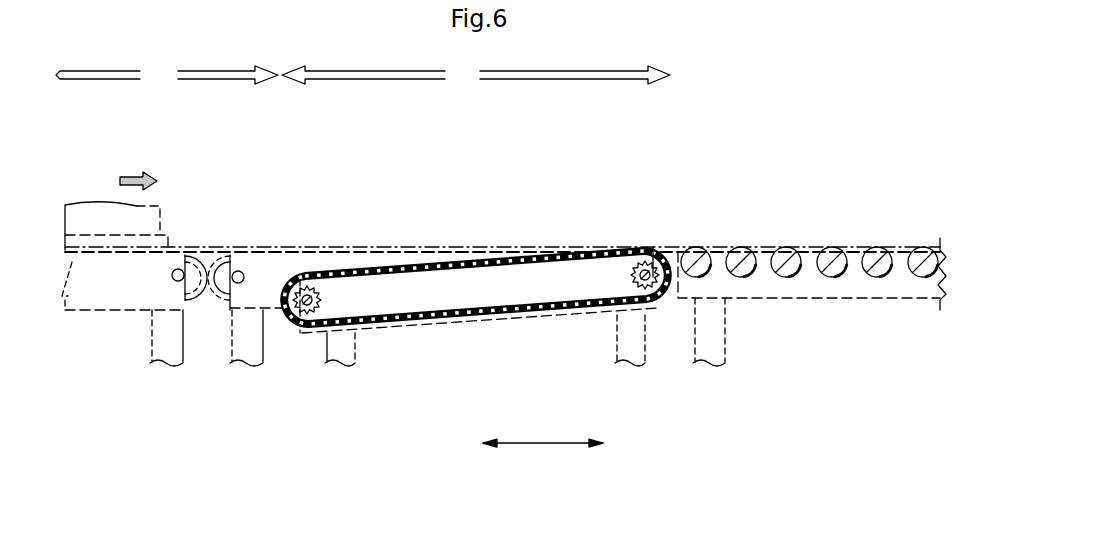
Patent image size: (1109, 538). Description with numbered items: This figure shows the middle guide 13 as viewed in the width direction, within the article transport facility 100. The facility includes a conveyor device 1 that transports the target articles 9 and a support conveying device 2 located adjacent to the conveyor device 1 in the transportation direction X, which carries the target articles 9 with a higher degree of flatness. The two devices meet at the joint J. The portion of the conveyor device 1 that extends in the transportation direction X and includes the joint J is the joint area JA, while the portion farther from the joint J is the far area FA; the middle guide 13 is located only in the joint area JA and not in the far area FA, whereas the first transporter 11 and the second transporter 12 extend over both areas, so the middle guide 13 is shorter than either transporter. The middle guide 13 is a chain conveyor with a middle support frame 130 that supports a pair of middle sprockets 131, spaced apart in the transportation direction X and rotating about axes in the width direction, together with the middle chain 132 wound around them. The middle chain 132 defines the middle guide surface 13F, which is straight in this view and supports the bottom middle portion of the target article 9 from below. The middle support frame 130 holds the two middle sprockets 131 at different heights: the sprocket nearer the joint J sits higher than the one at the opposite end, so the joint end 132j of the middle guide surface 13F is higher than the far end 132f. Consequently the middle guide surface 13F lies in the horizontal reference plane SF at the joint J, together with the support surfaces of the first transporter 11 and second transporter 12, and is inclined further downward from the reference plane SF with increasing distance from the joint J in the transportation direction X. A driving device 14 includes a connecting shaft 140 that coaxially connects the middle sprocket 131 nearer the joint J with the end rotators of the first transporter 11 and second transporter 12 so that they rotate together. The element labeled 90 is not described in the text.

The conveyor device 1 is at (393, 284).
The support conveying device 2 is at (812, 227).
The target article 9 is at (172, 236).
The first transporter 11 is at (133, 361).
The second transporter 12 is at (438, 224).
The middle guide 13 is at (506, 292).
The middle guide surface 13F is at (465, 262).
The driving device 14 is at (650, 284).
The head unit 90 is at (101, 270).
The article transport facility 100 is at (812, 205).
The middle support frame 130 is at (443, 334).
The middle sprocket 131 is at (330, 303).
The middle chain 132 is at (402, 262).
The far end 132f is at (315, 262).
The joint end 132j is at (630, 229).
The connecting shaft 140 is at (681, 341).
The far area FA is at (174, 168).
The joint area JA is at (576, 151).
The joint J is at (677, 224).
The reference plane SF is at (718, 250).
The transportation direction X is at (543, 431).